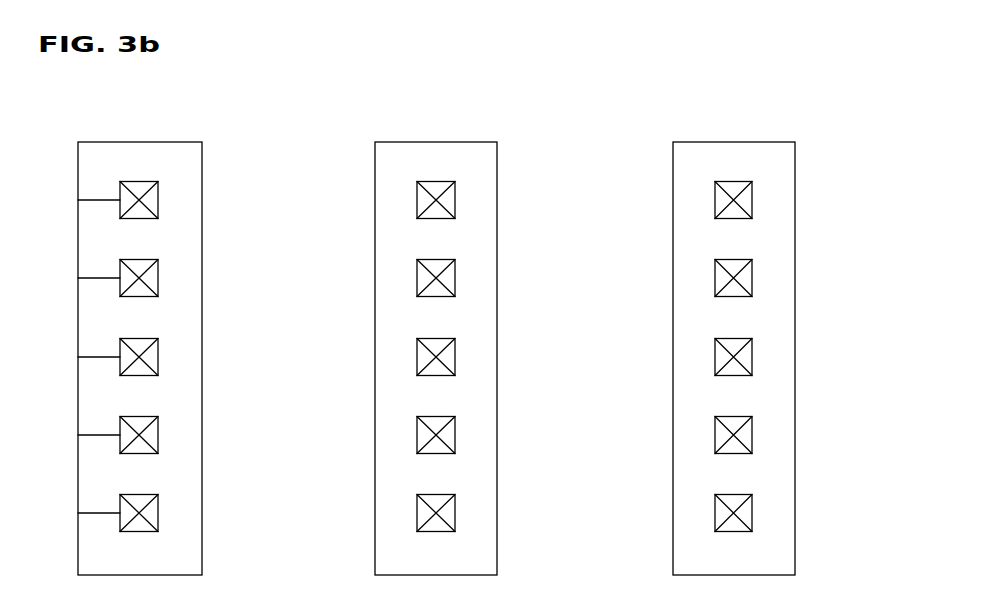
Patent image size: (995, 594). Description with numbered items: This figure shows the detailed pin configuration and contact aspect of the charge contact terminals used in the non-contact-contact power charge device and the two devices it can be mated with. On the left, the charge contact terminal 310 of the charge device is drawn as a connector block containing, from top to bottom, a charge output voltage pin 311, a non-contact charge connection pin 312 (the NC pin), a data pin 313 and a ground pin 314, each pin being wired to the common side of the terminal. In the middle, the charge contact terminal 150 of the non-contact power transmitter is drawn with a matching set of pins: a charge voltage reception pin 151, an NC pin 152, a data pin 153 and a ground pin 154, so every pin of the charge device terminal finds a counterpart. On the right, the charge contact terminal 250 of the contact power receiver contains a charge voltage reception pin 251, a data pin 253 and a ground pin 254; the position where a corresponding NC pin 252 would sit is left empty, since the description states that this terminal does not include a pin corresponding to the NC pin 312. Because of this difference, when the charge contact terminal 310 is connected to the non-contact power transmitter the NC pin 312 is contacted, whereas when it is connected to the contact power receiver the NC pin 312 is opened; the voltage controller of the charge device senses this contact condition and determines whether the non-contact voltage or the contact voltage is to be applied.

The charge contact terminal 310 is at (140, 340).
The charge output voltage pin 311 is at (158, 198).
The non-contact charge connection pin 312 is at (158, 276).
The data pin 313 is at (158, 357).
The ground pin 314 is at (158, 511).
The charge contact terminal 150 is at (436, 340).
The charge voltage reception pin 151 is at (455, 198).
The NC pin 152 is at (455, 276).
The data pin 153 is at (455, 357).
The ground pin 154 is at (455, 511).
The charge contact terminal 250 is at (734, 340).
The charge voltage reception pin 251 is at (752, 198).
The second element of second array 252 is at (752, 276).
The data pin 253 is at (752, 357).
The ground pin 254 is at (752, 511).